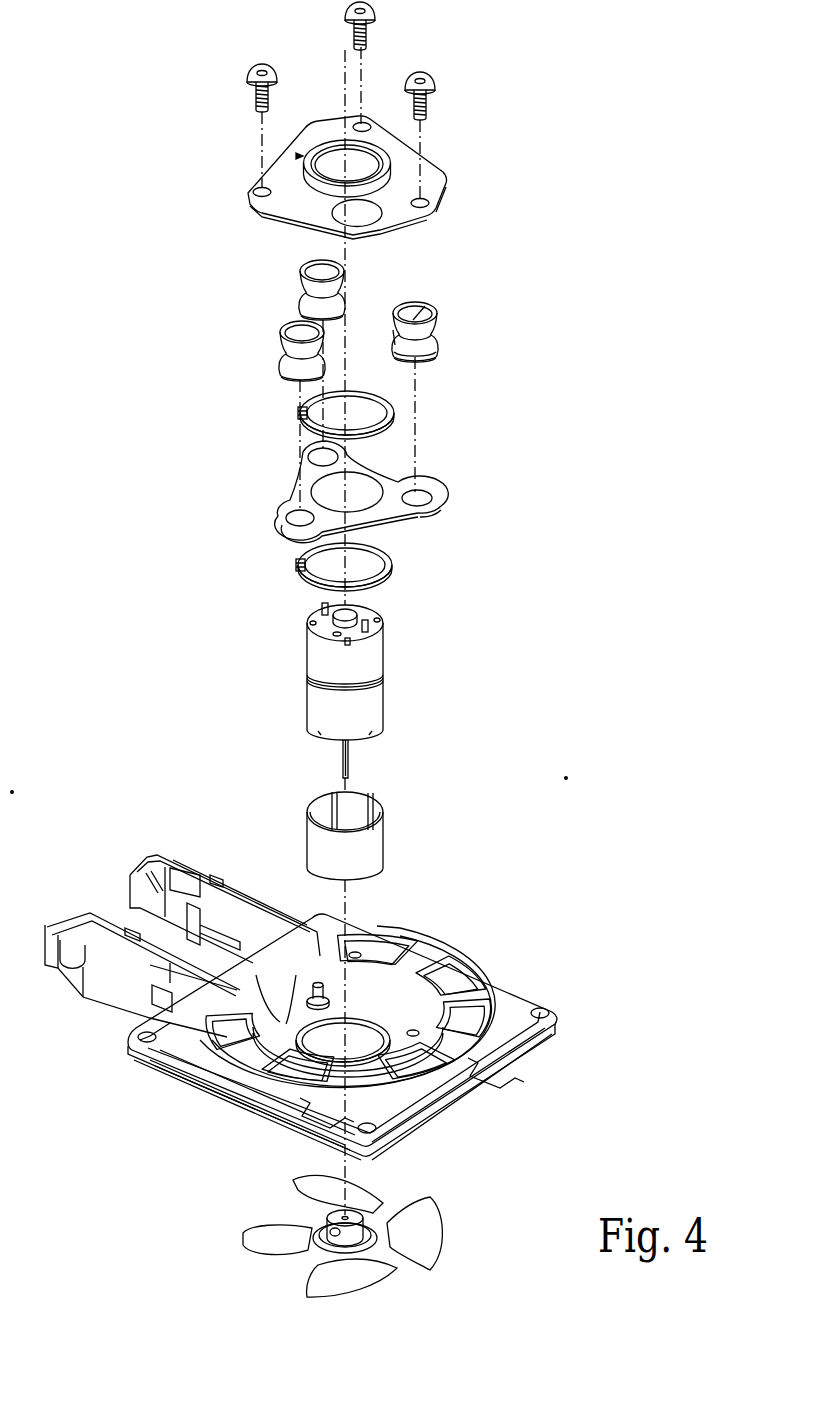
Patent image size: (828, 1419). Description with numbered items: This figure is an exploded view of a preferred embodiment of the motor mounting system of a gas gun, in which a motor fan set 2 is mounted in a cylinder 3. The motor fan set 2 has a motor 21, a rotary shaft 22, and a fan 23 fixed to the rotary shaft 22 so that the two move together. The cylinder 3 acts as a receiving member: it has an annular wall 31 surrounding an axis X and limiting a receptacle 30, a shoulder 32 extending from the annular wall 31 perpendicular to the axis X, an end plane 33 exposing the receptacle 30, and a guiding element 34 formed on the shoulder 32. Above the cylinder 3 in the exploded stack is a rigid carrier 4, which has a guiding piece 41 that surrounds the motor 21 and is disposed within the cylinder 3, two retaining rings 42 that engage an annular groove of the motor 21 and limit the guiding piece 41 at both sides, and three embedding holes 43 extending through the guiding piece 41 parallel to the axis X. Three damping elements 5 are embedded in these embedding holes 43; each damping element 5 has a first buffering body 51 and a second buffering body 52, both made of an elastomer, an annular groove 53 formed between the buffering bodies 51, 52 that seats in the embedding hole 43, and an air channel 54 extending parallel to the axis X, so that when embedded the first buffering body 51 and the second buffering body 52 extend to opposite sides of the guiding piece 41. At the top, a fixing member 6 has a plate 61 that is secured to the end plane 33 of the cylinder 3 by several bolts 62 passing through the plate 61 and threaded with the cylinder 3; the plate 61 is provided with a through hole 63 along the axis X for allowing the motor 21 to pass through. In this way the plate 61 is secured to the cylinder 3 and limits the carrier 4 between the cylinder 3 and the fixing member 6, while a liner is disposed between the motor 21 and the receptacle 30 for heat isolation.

The motor fan set 2 is at (348, 690).
The motor 21 is at (385, 694).
The rotary shaft 22 is at (349, 757).
The fan 23 is at (448, 1238).
The cylinder 3 is at (301, 1001).
The receptacle 30 is at (383, 985).
The annular wall 31 is at (293, 918).
The shoulder 32 is at (401, 1013).
The end plane 33 is at (253, 1063).
The guiding element 34 is at (290, 950).
The carrier 4 is at (356, 491).
The guiding piece 41 is at (383, 465).
The retaining rings 42 is at (394, 413).
The embedding holes 43 is at (307, 450).
The damping element 5 is at (367, 317).
The first buffering body 51 is at (422, 302).
The second buffering body 52 is at (438, 357).
The annular groove 53 is at (393, 337).
The air channel 54 is at (427, 312).
The fixing member 6 is at (342, 120).
The plate 61 is at (270, 162).
The bolts 62 is at (368, 30).
The through hole 63 is at (327, 167).